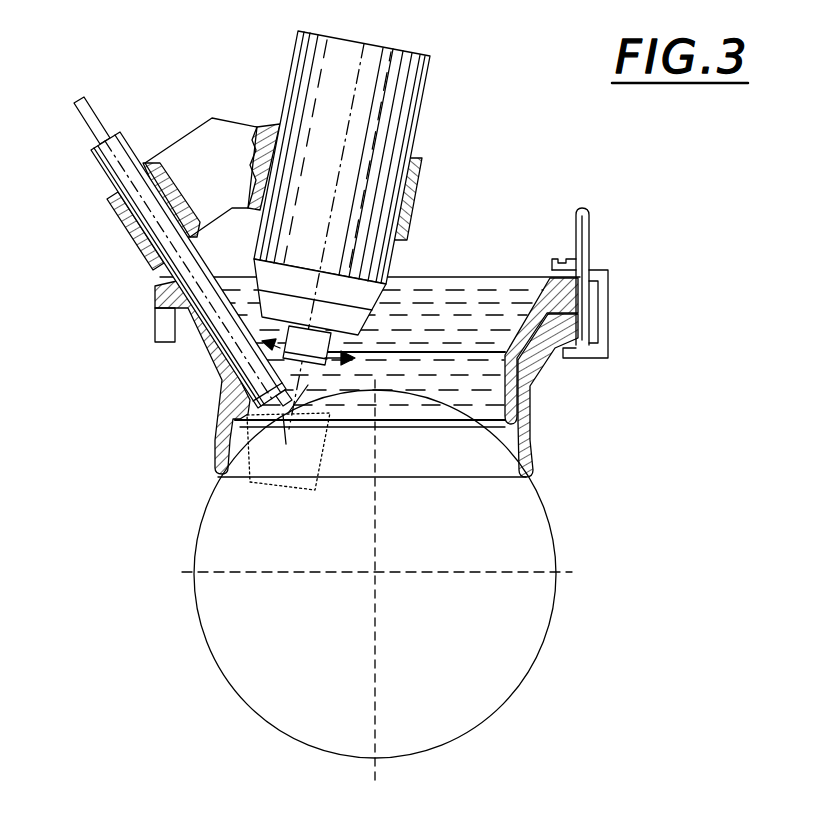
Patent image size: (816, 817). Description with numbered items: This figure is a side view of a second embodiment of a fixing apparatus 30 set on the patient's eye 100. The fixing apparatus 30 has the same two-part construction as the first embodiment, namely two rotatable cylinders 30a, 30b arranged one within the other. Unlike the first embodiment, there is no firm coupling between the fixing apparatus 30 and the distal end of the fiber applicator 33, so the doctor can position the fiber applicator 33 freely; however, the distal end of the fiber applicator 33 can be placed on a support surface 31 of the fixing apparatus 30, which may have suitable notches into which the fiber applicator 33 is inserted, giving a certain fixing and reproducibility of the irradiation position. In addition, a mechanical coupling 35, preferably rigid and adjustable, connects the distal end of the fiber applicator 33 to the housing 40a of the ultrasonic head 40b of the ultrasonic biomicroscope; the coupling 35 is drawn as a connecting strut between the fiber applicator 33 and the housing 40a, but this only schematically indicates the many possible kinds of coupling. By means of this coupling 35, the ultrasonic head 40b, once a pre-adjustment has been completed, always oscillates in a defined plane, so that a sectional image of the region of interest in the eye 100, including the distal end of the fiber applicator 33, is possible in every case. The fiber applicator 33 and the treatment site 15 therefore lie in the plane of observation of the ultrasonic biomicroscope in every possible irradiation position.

The treatment site 15 is at (287, 443).
The fixing apparatus 30 is at (566, 422).
The rotatable cylinder 30a is at (537, 463).
The rotatable cylinder 30b is at (527, 273).
The support surface 31 is at (187, 332).
The fiber applicator 33 is at (86, 128).
The mechanical coupling 35 is at (206, 140).
The housing 40a is at (412, 90).
The ultrasonic head 40b is at (313, 337).
The patient's eye 100 is at (546, 646).